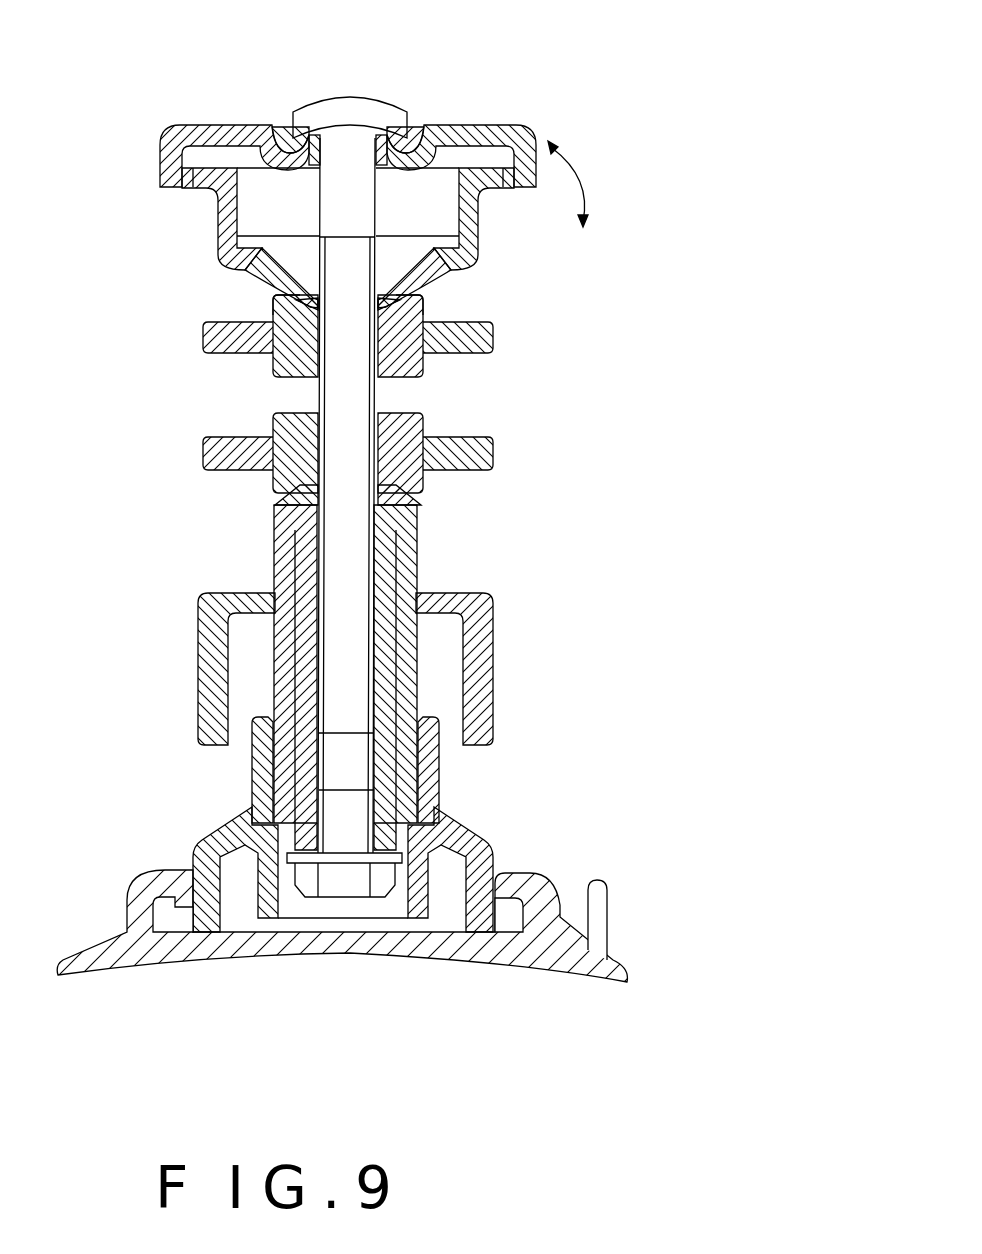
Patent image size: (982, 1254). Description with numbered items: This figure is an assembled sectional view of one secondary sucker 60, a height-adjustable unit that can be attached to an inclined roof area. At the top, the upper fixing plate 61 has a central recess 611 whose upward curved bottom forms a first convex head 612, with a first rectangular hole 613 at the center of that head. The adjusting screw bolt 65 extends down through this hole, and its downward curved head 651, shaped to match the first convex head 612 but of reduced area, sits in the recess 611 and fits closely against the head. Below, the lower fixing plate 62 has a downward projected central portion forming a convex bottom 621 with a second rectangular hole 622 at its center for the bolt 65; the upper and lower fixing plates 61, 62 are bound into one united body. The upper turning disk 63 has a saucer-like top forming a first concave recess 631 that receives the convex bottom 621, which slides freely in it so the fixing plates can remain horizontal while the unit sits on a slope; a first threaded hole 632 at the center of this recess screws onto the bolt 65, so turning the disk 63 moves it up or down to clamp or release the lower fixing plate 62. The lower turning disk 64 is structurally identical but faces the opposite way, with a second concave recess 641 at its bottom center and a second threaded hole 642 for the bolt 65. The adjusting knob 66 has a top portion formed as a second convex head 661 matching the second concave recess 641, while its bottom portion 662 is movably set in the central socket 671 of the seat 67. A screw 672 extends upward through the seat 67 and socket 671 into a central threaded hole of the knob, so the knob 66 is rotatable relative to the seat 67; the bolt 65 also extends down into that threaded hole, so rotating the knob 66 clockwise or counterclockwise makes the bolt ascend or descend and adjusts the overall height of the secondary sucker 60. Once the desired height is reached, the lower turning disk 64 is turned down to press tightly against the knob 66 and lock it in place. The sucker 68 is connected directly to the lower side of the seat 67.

The secondary sucker 60 is at (588, 341).
The upper fixing plate 61 is at (523, 133).
The central recess 611 is at (285, 133).
The first convex head 612 is at (422, 138).
The first rectangular hole 613 is at (314, 140).
The downward curved head 651 is at (373, 108).
The lower fixing plate 62 is at (470, 238).
The convex bottom 621 is at (413, 280).
The second rectangular hole 622 is at (310, 293).
The upper turning disk 63 is at (230, 347).
The first concave recess 631 is at (275, 304).
The first threaded hole 632 is at (388, 360).
The lower turning disk 64 is at (237, 465).
The second concave recess 641 is at (383, 492).
The second threaded hole 642 is at (383, 450).
The adjusting screw bolt 65 is at (355, 392).
The adjusting knob 66 is at (483, 663).
The second convex head 661 is at (410, 560).
The bottom portion 662 is at (407, 795).
The seat 67 is at (460, 827).
The central socket 671 is at (270, 797).
The screw 672 is at (383, 887).
The sucker 68 is at (575, 967).